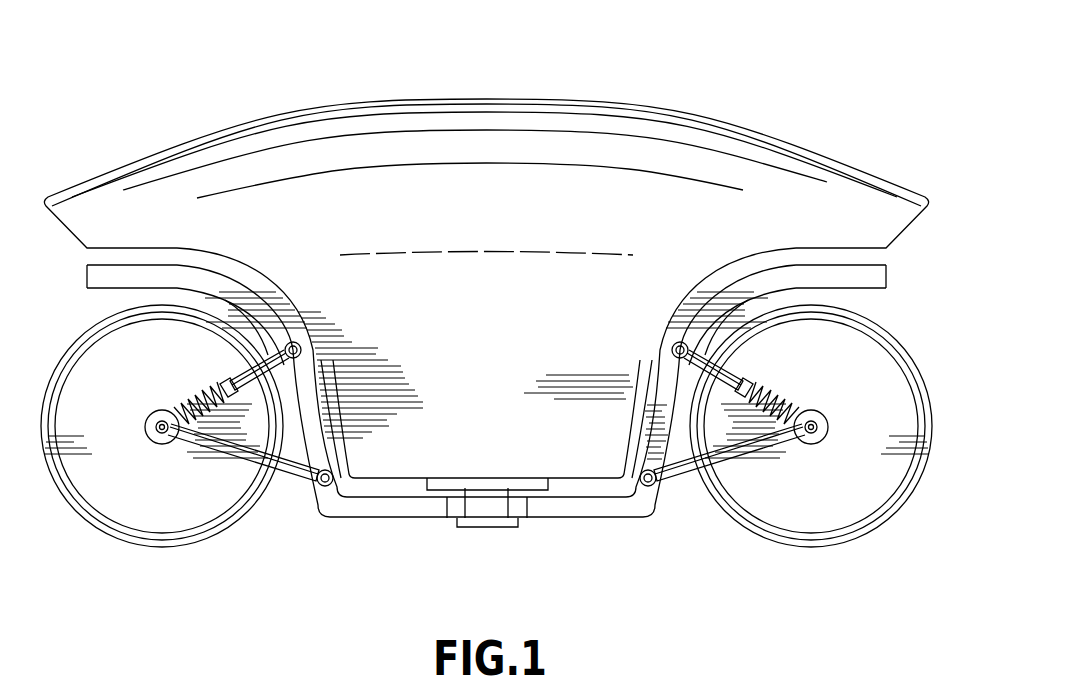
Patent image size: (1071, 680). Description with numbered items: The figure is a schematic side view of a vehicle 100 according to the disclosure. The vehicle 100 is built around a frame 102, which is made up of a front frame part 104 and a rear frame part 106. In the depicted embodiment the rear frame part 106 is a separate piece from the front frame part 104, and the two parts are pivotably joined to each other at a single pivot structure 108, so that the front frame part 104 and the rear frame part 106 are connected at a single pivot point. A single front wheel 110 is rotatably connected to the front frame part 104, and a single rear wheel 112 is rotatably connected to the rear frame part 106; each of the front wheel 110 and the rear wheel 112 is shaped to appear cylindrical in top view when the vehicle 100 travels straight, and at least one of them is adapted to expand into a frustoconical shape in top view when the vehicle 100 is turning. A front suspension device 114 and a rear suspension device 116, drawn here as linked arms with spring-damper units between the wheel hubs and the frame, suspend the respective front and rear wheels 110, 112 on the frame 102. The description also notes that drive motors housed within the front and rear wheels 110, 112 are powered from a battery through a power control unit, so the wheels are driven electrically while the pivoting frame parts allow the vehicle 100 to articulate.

The vehicle 100 is at (792, 86).
The frame 102 is at (365, 540).
The front frame part 104 is at (420, 520).
The rear frame part 106 is at (613, 520).
The single pivot structure 108 is at (485, 513).
The front wheel 110 is at (160, 547).
The rear wheel 112 is at (807, 550).
The front suspension device 114 is at (293, 500).
The rear suspension device 116 is at (717, 507).